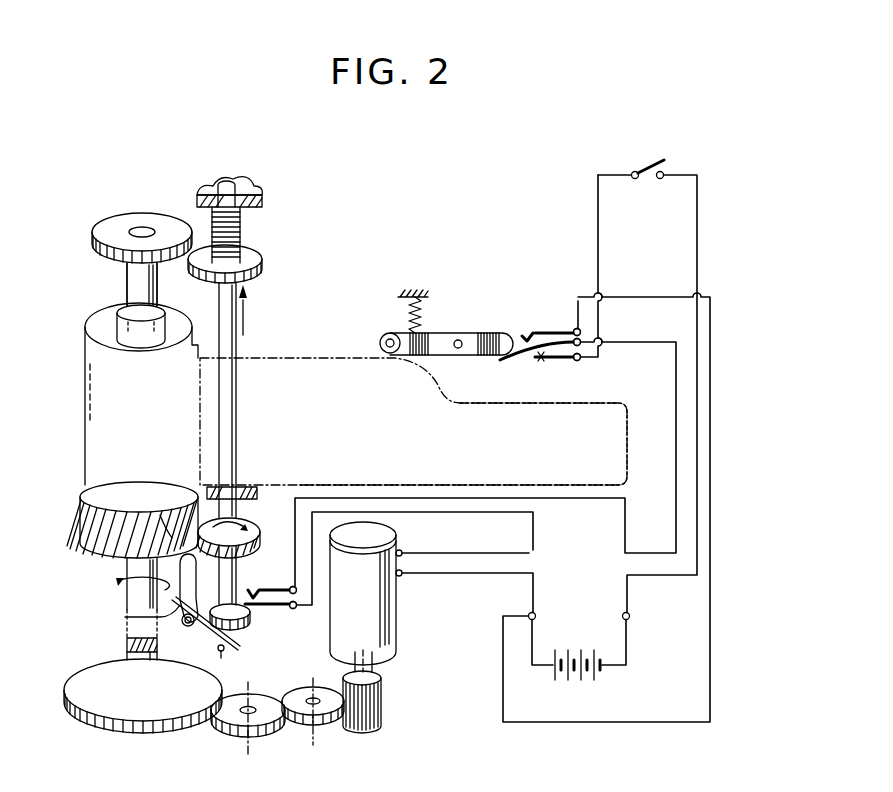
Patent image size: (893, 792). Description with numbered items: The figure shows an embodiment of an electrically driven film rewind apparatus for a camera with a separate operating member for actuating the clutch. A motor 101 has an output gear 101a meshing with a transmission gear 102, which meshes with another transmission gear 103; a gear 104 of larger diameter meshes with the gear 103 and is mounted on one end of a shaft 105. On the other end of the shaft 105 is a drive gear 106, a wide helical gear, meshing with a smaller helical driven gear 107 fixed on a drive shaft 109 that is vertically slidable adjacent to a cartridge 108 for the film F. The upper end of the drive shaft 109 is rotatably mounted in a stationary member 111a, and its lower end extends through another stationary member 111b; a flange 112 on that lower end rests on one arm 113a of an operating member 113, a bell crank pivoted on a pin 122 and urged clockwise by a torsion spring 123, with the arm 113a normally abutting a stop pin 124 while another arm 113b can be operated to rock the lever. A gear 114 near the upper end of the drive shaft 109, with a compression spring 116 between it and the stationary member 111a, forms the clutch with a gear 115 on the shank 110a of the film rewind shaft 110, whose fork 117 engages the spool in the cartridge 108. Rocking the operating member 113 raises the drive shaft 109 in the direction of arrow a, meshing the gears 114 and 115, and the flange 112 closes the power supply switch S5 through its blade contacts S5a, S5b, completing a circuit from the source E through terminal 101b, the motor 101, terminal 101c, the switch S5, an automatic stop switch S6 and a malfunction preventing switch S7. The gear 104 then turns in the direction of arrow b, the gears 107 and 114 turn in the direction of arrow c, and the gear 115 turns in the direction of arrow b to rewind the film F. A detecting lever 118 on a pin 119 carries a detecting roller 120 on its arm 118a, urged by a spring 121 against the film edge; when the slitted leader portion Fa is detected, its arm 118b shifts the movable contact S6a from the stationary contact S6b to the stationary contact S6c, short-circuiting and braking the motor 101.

The motor 101 is at (382, 633).
The output gear 101a is at (375, 695).
The power supply terminal 101b is at (402, 575).
The power supply terminal 101c is at (412, 542).
The transmission gear 102 is at (325, 722).
The transmission gear 103 is at (260, 720).
The gear 104 is at (170, 715).
The shaft 105 is at (135, 660).
The drive gear 106 is at (90, 535).
The driven gear 107 is at (250, 528).
The cartridge 108 is at (90, 400).
The drive shaft 109 is at (225, 405).
The film rewind shaft 110 is at (120, 277).
The shank 110a is at (137, 287).
The stationary member 111a is at (270, 193).
The stationary member 111b is at (257, 473).
The flange 112 is at (250, 612).
The operating member 113 is at (188, 622).
The arm 113a is at (248, 633).
The arm 113b is at (170, 537).
The gear 114 is at (260, 262).
The gear 115 is at (143, 228).
The compression spring 116 is at (248, 229).
The fork 117 is at (122, 327).
The detecting lever 118 is at (450, 326).
The arm 118a is at (385, 335).
The arm 118b is at (502, 340).
The pin 119 is at (458, 348).
The detecting roller 120 is at (378, 348).
The spring 121 is at (437, 302).
The pin 122 is at (158, 652).
The torsion spring 123 is at (125, 620).
The stop pin 124 is at (220, 650).
The power supply switch S5 is at (280, 573).
The movable contact S5a is at (293, 608).
The movable contact S5b is at (278, 596).
The automatic stop switch S6 is at (533, 323).
The movable contact S6a is at (565, 358).
The stationary contact S6b is at (560, 358).
The stationary contact S6c is at (551, 324).
The malfunction preventing switch S7 is at (632, 170).
The power source E is at (583, 672).
The film F is at (310, 358).
The leader portion Fa is at (510, 405).
The arrow a is at (248, 311).
The arrow b is at (118, 586).
The arrow c is at (225, 530).